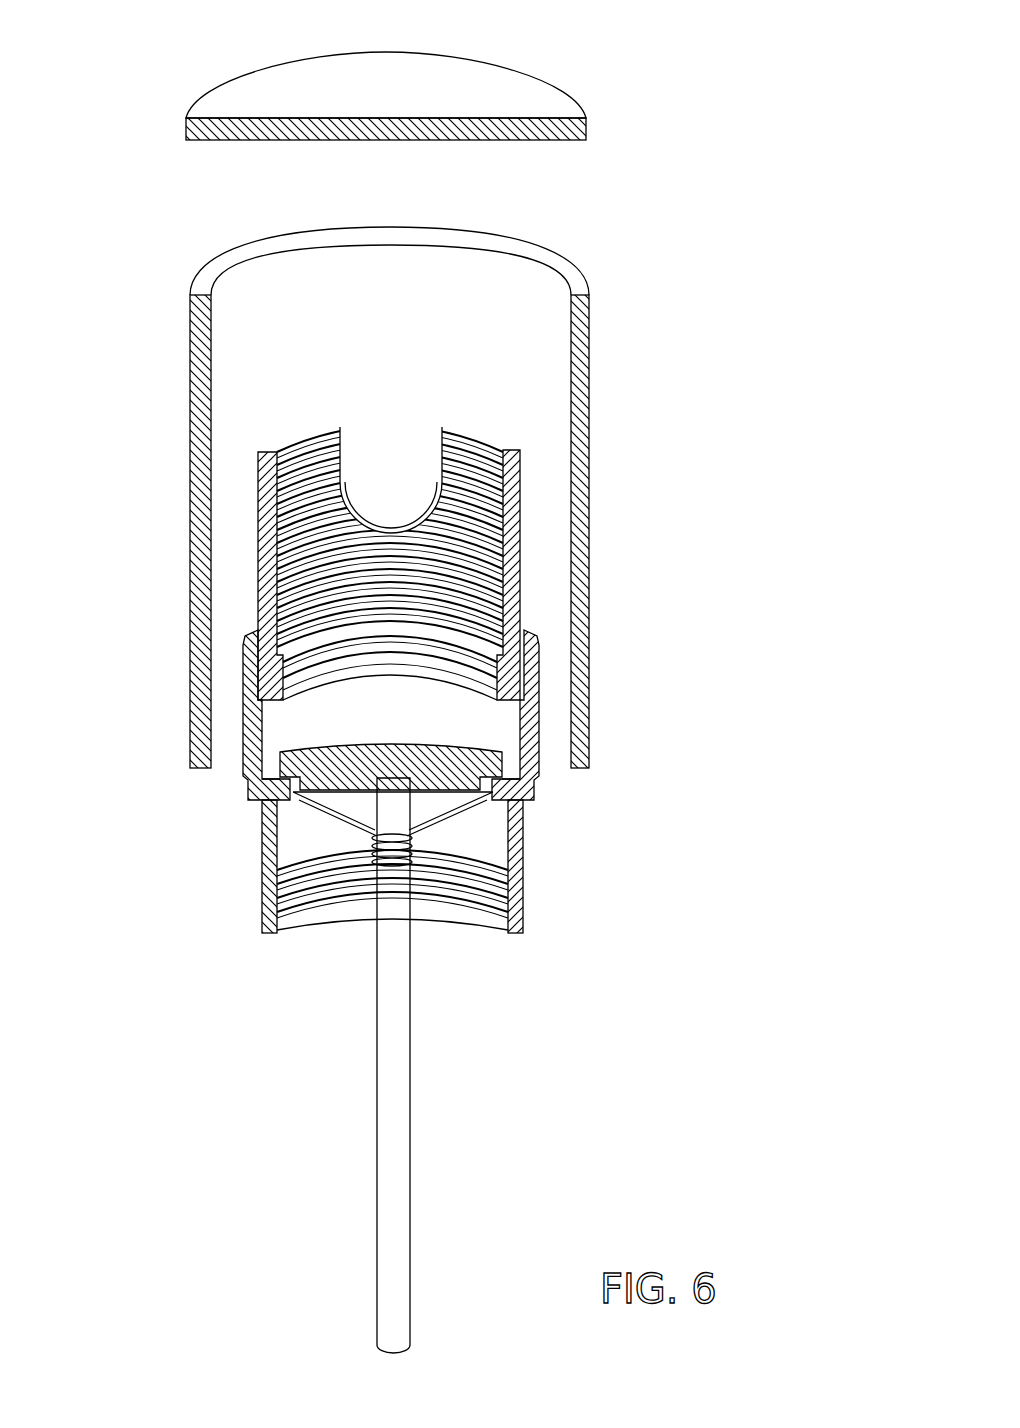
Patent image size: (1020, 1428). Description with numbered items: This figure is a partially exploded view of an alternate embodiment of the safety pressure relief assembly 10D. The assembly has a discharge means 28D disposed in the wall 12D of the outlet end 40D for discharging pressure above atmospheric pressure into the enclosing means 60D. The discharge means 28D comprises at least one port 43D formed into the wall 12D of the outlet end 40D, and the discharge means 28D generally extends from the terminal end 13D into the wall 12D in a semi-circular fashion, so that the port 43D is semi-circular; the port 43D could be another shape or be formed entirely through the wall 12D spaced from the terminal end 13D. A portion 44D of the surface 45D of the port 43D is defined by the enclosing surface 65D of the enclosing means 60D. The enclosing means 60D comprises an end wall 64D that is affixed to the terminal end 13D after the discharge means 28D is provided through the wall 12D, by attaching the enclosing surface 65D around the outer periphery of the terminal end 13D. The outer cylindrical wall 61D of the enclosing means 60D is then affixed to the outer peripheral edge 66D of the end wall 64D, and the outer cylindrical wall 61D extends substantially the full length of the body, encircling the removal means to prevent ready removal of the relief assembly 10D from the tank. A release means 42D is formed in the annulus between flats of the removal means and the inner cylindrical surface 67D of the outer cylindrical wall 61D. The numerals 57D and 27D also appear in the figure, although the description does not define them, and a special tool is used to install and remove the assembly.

The safety pressure relief assembly 10D is at (177, 833).
The end wall 64D is at (382, 88).
The outer peripheral edge 66D is at (588, 127).
The enclosing surface 65D is at (233, 143).
The overcap top 57D is at (548, 265).
The enclosing means 60D is at (282, 272).
The outer cylindrical wall 61D is at (580, 352).
The inner cylindrical surface 67D is at (217, 395).
The overcap lower edge 27D is at (578, 765).
The wall 12D is at (508, 605).
The outlet end 40D is at (397, 572).
The port 43D is at (415, 488).
The terminal end 13D is at (477, 427).
The discharge means 28D is at (410, 450).
The portion 44D is at (363, 443).
The surface 45D is at (388, 528).
The release means 42D is at (557, 753).